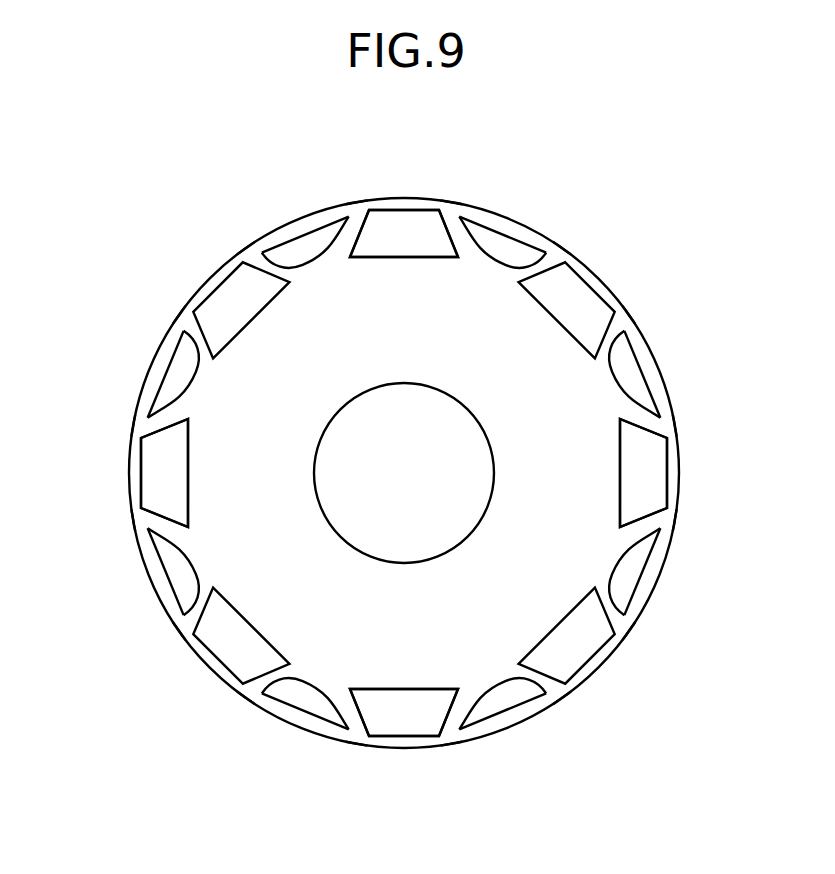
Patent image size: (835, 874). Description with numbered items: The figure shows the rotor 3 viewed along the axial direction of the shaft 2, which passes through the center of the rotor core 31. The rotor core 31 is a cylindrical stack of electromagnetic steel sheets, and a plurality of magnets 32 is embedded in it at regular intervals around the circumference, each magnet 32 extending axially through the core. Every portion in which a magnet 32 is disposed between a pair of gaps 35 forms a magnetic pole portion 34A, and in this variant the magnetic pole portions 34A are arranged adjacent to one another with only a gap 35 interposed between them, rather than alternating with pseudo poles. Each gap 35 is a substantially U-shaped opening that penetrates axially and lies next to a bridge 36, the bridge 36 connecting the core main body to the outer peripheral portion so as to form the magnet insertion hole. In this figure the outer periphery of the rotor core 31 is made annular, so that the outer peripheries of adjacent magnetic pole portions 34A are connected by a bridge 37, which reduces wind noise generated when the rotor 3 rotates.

The shaft 2 is at (350, 516).
The rotor 3 is at (664, 166).
The rotor core 31 is at (236, 410).
The magnet 32 is at (416, 232).
The magnetic pole portion 34A is at (389, 185).
The gap 35 is at (293, 250).
The bridge 36 is at (356, 228).
The bridge 37 is at (314, 222).